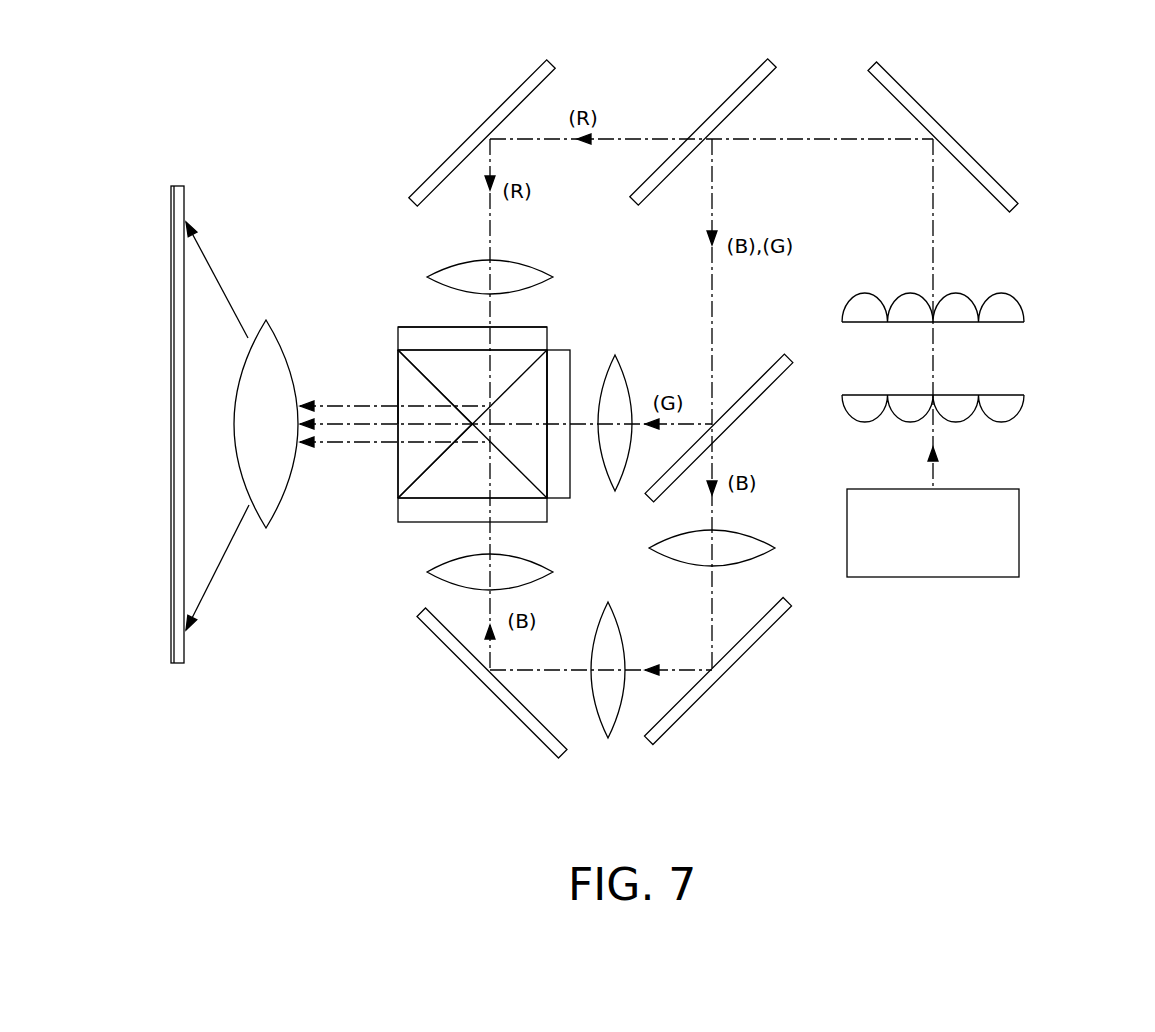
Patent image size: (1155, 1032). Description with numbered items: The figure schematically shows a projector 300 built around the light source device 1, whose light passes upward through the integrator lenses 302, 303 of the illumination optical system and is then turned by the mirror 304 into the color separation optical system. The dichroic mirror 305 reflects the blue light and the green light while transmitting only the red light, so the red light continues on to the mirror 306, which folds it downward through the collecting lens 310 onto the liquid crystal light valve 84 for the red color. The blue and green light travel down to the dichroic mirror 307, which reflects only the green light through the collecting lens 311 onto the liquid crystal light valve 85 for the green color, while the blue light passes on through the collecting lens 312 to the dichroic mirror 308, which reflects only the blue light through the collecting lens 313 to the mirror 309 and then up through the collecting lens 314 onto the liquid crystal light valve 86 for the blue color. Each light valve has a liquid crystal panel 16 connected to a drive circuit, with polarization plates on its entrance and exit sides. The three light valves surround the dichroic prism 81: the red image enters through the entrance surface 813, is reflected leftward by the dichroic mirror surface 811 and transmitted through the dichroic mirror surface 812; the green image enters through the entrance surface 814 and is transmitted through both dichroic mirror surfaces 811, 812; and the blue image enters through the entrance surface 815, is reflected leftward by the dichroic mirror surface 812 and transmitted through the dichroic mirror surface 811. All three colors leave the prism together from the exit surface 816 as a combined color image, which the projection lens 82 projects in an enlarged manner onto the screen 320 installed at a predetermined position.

The light source device 1 is at (1020, 527).
The projector 300 is at (1014, 130).
The integrator lens 302 is at (1010, 398).
The integrator lens 303 is at (1010, 308).
The mirror 304 is at (913, 102).
The dichroic mirror 305 is at (737, 103).
The mirror 306 is at (512, 103).
The dichroic mirror 307 is at (760, 385).
The dichroic mirror 308 is at (767, 630).
The mirror 309 is at (460, 652).
The collecting lens 310 is at (452, 273).
The collecting lens 311 is at (618, 382).
The collecting lens 312 is at (740, 545).
The collecting lens 313 is at (610, 712).
The collecting lens 314 is at (422, 588).
The screen 320 is at (185, 654).
The liquid crystal panel 16 is at (448, 333).
The dichroic prism 81 is at (410, 475).
The projection lens 82 is at (266, 340).
The liquid crystal light valve 84 is at (410, 340).
The liquid crystal light valve 85 is at (558, 358).
The liquid crystal light valve 86 is at (537, 510).
The dichroic mirror surface 811 is at (435, 457).
The dichroic mirror surface 812 is at (410, 370).
The entrance surface 813 is at (433, 357).
The entrance surface 814 is at (537, 450).
The entrance surface 815 is at (440, 490).
The exit surface 816 is at (398, 392).